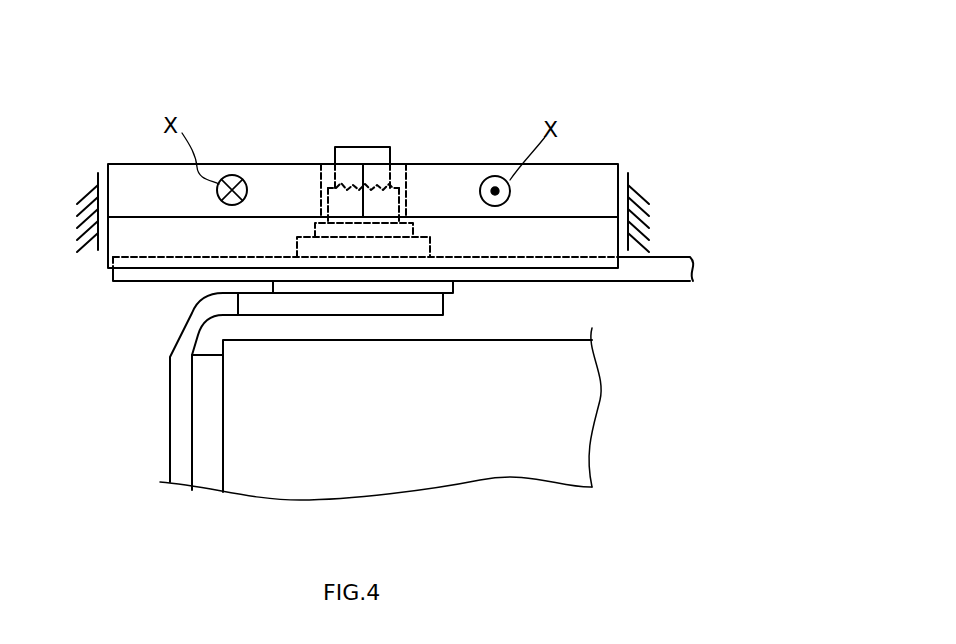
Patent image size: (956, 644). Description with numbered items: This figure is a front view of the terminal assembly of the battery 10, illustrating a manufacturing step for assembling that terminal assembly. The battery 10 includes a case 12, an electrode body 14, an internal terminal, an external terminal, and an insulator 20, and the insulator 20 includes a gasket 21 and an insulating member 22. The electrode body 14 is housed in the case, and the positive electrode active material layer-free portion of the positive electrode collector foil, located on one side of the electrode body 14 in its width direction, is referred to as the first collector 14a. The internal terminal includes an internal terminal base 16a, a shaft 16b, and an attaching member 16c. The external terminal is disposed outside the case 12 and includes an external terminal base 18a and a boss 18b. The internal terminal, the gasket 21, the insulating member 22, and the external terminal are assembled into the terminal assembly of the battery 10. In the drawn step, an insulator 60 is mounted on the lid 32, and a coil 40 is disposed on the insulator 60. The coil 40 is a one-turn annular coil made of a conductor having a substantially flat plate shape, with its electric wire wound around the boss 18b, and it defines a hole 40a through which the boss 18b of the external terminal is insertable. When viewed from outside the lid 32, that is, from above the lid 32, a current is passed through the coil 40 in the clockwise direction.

The battery 10 is at (181, 74).
The coil 40 is at (601, 150).
The hole 40a is at (328, 151).
The shaft 16b is at (391, 148).
The boss 18b is at (405, 193).
The external terminal base 18a is at (416, 225).
The insulating member 22 is at (300, 240).
The lid 32 is at (125, 283).
The insulator 60 is at (600, 270).
The case 12 is at (139, 296).
The insulator 20 is at (490, 294).
The gasket 21 is at (450, 284).
The internal terminal base 16a is at (453, 320).
The attaching member 16c is at (170, 417).
The first collector 14a is at (205, 462).
The electrode body 14 is at (558, 435).